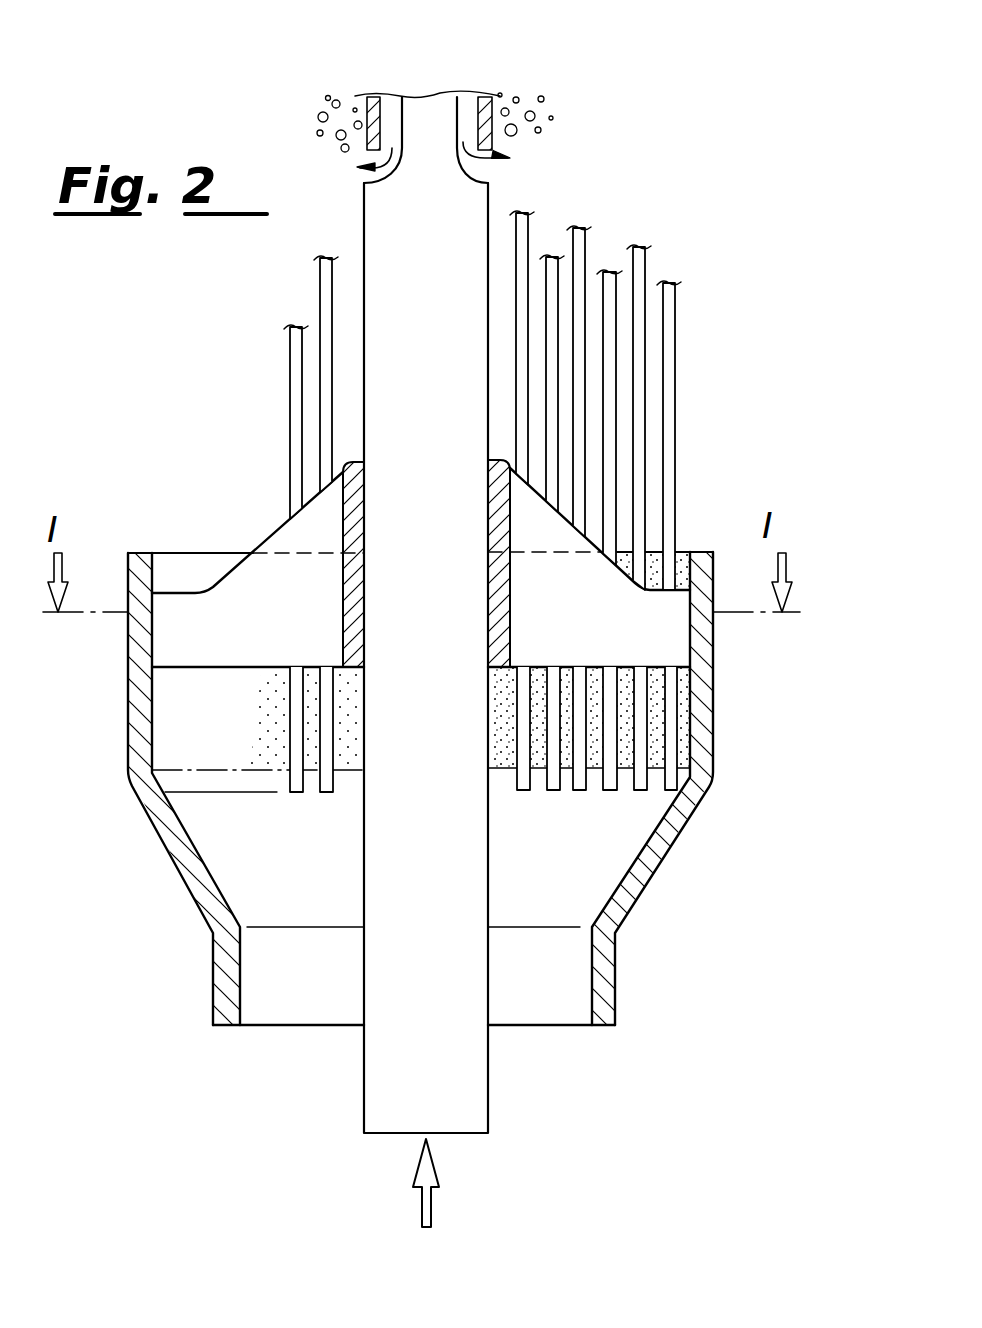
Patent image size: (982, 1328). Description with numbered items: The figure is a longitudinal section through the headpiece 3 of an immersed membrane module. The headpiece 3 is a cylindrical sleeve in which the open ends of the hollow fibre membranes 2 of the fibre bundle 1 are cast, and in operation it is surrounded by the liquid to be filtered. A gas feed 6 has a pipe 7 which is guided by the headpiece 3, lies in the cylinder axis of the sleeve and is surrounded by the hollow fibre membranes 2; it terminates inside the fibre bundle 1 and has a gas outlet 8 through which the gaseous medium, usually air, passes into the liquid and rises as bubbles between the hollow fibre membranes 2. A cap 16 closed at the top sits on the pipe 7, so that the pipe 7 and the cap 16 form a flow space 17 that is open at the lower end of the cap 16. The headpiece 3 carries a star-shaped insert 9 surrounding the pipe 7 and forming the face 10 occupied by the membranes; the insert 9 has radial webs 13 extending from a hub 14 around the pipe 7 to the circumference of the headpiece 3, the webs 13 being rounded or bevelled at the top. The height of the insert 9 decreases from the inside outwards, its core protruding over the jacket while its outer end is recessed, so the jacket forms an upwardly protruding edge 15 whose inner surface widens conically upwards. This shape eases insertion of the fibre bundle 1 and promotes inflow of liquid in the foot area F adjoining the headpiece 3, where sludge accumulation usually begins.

The fibre bundle 1 is at (690, 298).
The hollow fibre membranes 2 is at (667, 437).
The headpiece 3 is at (740, 890).
The gas feed 6 is at (432, 1203).
The pipe 7 is at (375, 970).
The gas outlet 8 is at (518, 165).
The star-shaped insert 9 is at (207, 673).
The face 10 is at (697, 535).
The radial webs 13 is at (250, 605).
The hub 14 is at (503, 588).
The edge 15 is at (728, 680).
The cap 16 is at (368, 112).
The flow space 17 is at (463, 108).
The foot area F is at (680, 500).